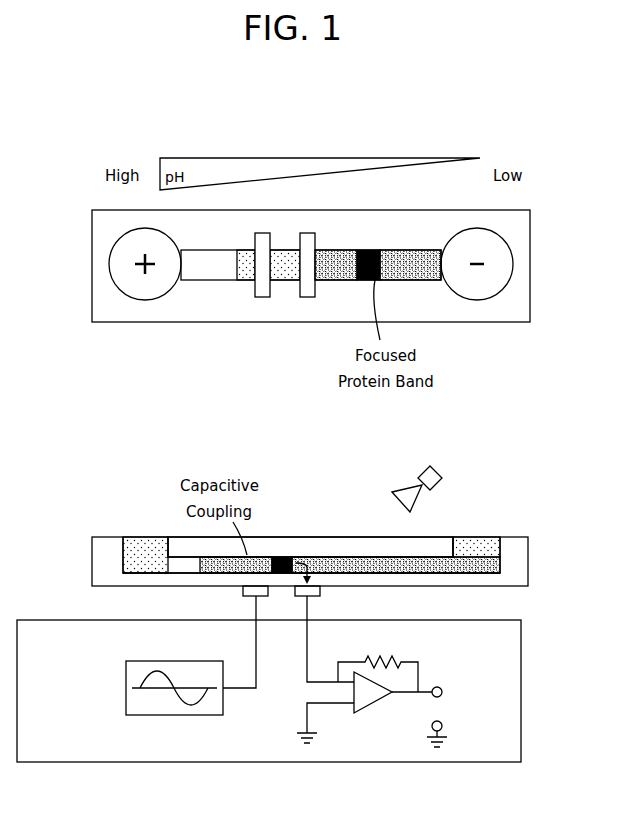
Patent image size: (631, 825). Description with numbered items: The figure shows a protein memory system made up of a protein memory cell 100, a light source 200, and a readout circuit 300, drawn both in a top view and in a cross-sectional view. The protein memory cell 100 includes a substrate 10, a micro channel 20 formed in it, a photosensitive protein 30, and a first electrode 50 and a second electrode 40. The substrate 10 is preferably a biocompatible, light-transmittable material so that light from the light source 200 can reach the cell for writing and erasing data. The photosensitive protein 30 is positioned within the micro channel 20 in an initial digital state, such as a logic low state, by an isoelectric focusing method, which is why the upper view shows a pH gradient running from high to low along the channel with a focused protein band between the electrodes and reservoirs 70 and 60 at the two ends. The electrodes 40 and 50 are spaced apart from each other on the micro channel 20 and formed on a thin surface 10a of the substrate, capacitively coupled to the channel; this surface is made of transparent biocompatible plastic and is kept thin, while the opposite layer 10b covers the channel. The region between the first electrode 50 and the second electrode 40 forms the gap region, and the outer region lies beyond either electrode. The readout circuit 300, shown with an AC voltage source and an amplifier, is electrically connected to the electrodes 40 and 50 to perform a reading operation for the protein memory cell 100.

The substrate 10 is at (92, 262).
The surface 10a is at (138, 580).
The upper substrate 10b is at (176, 552).
The micro channel 20 is at (337, 280).
The photosensitive protein 30 is at (372, 250).
The second electrode 40 is at (307, 297).
The first electrode 50 is at (262, 297).
The cathode reservoir 60 is at (477, 300).
The anode reservoir 70 is at (147, 300).
The protein memory cell 100 is at (530, 262).
The light source 200 is at (442, 476).
The readout circuit 300 is at (521, 670).